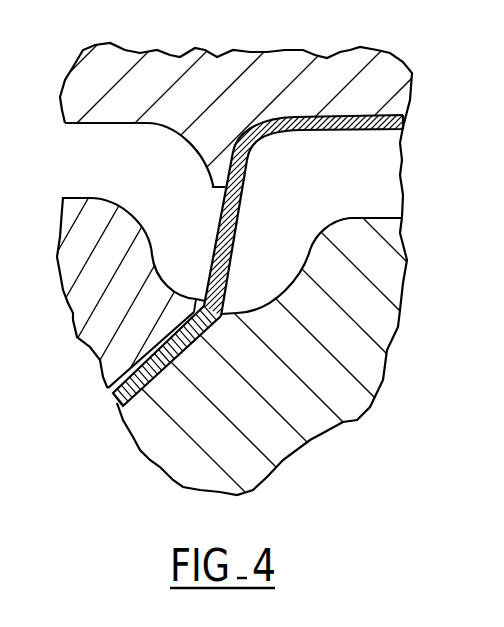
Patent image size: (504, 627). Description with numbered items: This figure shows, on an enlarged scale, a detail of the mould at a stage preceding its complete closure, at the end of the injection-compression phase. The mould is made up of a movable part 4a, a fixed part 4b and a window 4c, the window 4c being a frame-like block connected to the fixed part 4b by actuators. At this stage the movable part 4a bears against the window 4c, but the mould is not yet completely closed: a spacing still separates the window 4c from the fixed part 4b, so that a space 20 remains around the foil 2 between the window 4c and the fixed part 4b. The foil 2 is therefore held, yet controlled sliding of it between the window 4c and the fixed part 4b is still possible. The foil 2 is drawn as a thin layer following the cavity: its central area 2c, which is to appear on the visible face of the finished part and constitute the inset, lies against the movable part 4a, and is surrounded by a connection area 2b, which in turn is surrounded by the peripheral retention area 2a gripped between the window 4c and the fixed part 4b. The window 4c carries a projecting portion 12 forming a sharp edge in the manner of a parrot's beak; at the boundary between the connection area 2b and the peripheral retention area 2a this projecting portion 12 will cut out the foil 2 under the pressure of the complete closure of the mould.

The movable part 4a is at (220, 83).
The fixed part 4b is at (297, 400).
The window 4c is at (90, 293).
The foil 2 is at (248, 295).
The peripheral retention area 2a is at (128, 416).
The connection area 2b is at (240, 233).
The central area 2c is at (380, 130).
The projecting portion 12 is at (194, 307).
The space 20 is at (110, 397).